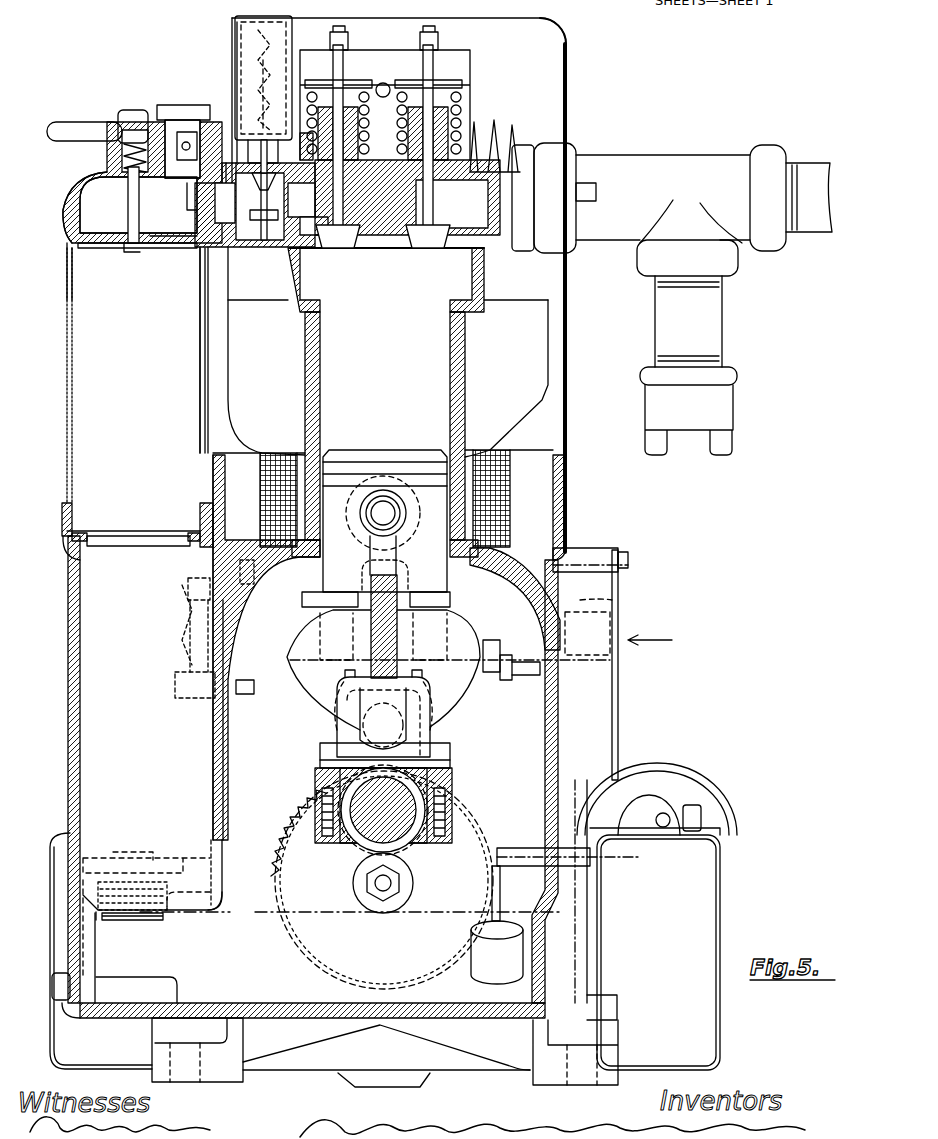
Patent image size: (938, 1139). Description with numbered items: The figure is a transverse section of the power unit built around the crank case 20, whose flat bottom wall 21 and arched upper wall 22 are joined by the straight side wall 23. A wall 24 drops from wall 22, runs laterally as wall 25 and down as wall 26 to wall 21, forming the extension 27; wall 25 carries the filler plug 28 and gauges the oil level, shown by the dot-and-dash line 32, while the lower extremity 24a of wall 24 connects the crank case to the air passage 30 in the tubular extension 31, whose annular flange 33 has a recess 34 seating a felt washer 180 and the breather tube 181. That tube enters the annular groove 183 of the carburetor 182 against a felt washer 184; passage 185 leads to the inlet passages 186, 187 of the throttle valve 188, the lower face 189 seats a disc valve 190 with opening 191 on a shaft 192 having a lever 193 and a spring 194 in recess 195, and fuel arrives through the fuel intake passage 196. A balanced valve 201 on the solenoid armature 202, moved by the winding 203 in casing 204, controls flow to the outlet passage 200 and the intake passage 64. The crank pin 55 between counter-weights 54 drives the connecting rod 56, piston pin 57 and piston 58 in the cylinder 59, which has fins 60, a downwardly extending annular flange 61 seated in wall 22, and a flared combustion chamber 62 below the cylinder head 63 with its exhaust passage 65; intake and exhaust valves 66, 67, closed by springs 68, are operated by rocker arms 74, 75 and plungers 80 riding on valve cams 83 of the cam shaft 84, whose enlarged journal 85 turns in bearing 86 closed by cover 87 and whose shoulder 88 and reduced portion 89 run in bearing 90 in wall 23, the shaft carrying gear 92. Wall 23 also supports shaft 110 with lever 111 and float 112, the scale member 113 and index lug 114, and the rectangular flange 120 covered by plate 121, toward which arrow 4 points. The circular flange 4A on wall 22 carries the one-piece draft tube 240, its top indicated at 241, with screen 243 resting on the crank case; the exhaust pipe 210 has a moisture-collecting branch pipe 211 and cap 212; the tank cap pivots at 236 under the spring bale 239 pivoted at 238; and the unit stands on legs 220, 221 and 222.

The section line direction 4 is at (659, 640).
The circular flange 4A is at (230, 472).
The crank case 20 is at (293, 990).
The bottom wall 21 is at (462, 1012).
The upper wall 22 is at (270, 560).
The side wall 23 is at (552, 760).
The wall 24 is at (222, 766).
The lower extremity of wall 24a is at (222, 838).
The lateral wall 25 is at (183, 903).
The downward wall 26 is at (92, 948).
The extension of the crank case 27 is at (148, 962).
The plug 28 is at (132, 852).
The air passage 30 is at (100, 632).
The tubular extension 31 is at (72, 685).
The lubricant level 32 is at (252, 908).
The annular flange 33 is at (62, 530).
The recess 34 is at (200, 520).
The counter-weights 54 is at (430, 690).
The crank pin 55 is at (368, 848).
The connecting rod 56 is at (372, 700).
The piston pin 57 is at (386, 508).
The piston 58 is at (340, 500).
The cylinder 59 is at (305, 380).
The fins 60 is at (532, 332).
The cylinder flange 61 is at (318, 560).
The combustion chamber 62 is at (447, 285).
The cylinder head 63 is at (476, 165).
The intake passage 64 is at (300, 225).
The exhaust passage 65 is at (476, 200).
The intake valve 66 is at (340, 232).
The exhaust valve 67 is at (428, 232).
The springs 68 is at (306, 50).
The rocker arm 74 is at (347, 52).
The rocker arm 75 is at (445, 55).
The plunger 80 is at (314, 600).
The valve cam 83 is at (330, 616).
The cam shaft 84 is at (275, 650).
The enlarged journal 85 is at (190, 630).
The bearing 86 is at (242, 562).
The cover 87 is at (190, 604).
The shoulder 88 is at (505, 684).
The reduced portion 89 is at (612, 600).
The bearing 90 is at (515, 668).
The gear 92 is at (385, 575).
The shaft 110 is at (524, 850).
The lever 111 is at (493, 890).
The float 112 is at (472, 944).
The scale member 113 is at (597, 922).
The index mark or lug 114 is at (590, 996).
The rectangular flange 120 is at (596, 548).
The plate 121 is at (618, 695).
The washer 180 is at (88, 542).
The breather tube 181 is at (66, 400).
The carburetor 182 is at (92, 190).
The annular groove 183 is at (70, 238).
The felt washer 184 is at (70, 215).
The passage 185 is at (108, 198).
The inlet passage 186 is at (240, 176).
The inlet passage 187 is at (224, 280).
The throttle valve 188 is at (233, 145).
The lower face 189 is at (166, 248).
The disc valve 190 is at (130, 252).
The opening 191 is at (100, 248).
The shaft 192 is at (139, 201).
The lever 193 is at (82, 128).
The spring 194 is at (146, 140).
The recess 195 is at (122, 138).
The fuel intake passage 196 is at (181, 128).
The outlet passage 200 is at (272, 200).
The balanced valve 201 is at (256, 200).
The solenoid armature 202 is at (255, 82).
The solenoid magnet winding 203 is at (258, 65).
The casing 204 is at (240, 25).
The exhaust pipe 210 is at (665, 172).
The branch pipe 211 is at (710, 330).
The cap 212 is at (718, 413).
The leg 220 is at (600, 1082).
The leg 221 is at (222, 1082).
The leg 222 is at (356, 1080).
The pivot 236 is at (700, 838).
The pivot 238 is at (708, 828).
The spring bale 239 is at (718, 790).
The draft tube 240 is at (568, 95).
The casing top corner 241 is at (560, 26).
The screen 243 is at (262, 484).